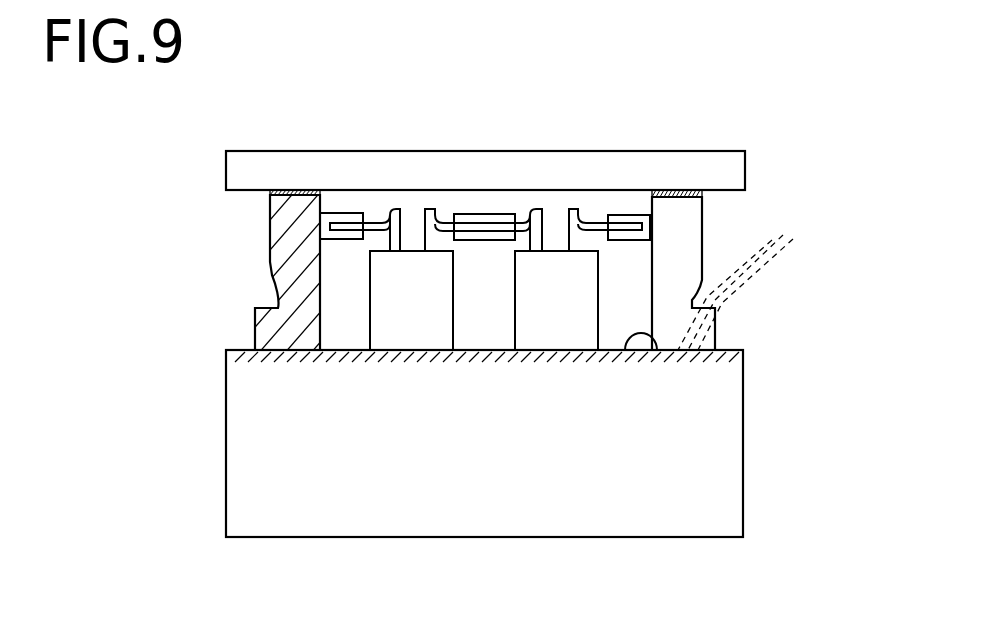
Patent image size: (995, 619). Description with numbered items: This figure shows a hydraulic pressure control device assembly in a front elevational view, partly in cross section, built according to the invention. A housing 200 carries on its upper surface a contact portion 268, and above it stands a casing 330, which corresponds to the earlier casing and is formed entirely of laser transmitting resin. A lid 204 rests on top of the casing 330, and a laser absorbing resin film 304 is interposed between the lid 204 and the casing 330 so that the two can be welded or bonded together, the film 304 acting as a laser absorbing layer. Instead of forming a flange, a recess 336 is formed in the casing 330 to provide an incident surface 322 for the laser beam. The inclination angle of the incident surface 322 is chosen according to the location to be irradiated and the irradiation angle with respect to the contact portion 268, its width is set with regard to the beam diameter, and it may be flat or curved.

The housing 200 is at (650, 545).
The lid 204 is at (265, 158).
The laser absorbing resin film 304 is at (270, 195).
The casing 330 is at (290, 258).
The recess 336 is at (262, 297).
The incident surface 322 is at (713, 290).
The contact portion 268 is at (625, 350).